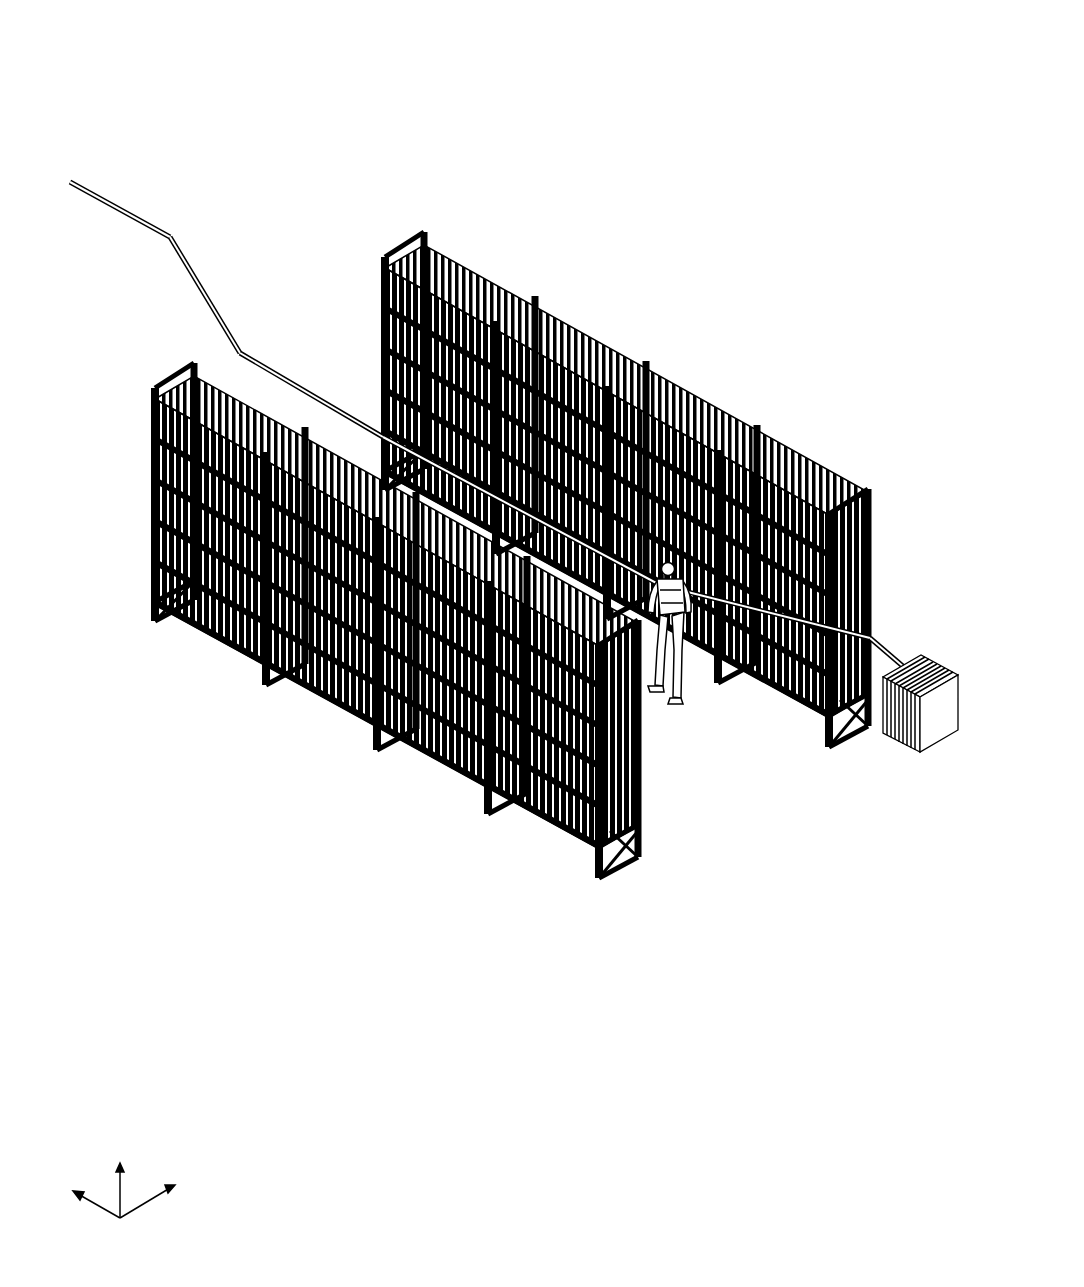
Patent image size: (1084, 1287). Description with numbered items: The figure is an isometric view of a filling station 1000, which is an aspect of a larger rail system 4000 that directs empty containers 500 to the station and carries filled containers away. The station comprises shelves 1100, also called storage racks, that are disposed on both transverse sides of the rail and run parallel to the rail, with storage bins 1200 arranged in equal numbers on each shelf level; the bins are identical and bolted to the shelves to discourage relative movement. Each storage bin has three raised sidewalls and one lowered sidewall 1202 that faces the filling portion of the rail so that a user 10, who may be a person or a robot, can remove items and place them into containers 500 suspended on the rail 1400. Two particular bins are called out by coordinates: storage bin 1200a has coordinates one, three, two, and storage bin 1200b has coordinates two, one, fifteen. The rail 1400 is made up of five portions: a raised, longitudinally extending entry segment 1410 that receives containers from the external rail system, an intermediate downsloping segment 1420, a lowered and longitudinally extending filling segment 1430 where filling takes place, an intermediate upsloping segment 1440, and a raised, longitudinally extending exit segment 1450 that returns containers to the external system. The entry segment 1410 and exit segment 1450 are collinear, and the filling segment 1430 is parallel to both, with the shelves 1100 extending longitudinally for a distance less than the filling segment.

The filling station 1000 is at (352, 95).
The rail system 4000 is at (503, 632).
The user 10 is at (663, 697).
The containers 500 is at (950, 742).
The shelves 1100 is at (425, 262).
The storage bins 1200 is at (314, 670).
The storage bin 1200a is at (590, 800).
The storage bin 1200b is at (470, 278).
The lowered sidewall 1202 is at (492, 302).
The rail 1400 is at (224, 278).
The entry segment 1410 is at (893, 650).
The intermediate downsloping segment 1420 is at (718, 688).
The filling segment 1430 is at (328, 410).
The intermediate upsloping segment 1440 is at (205, 305).
The exit segment 1450 is at (123, 210).